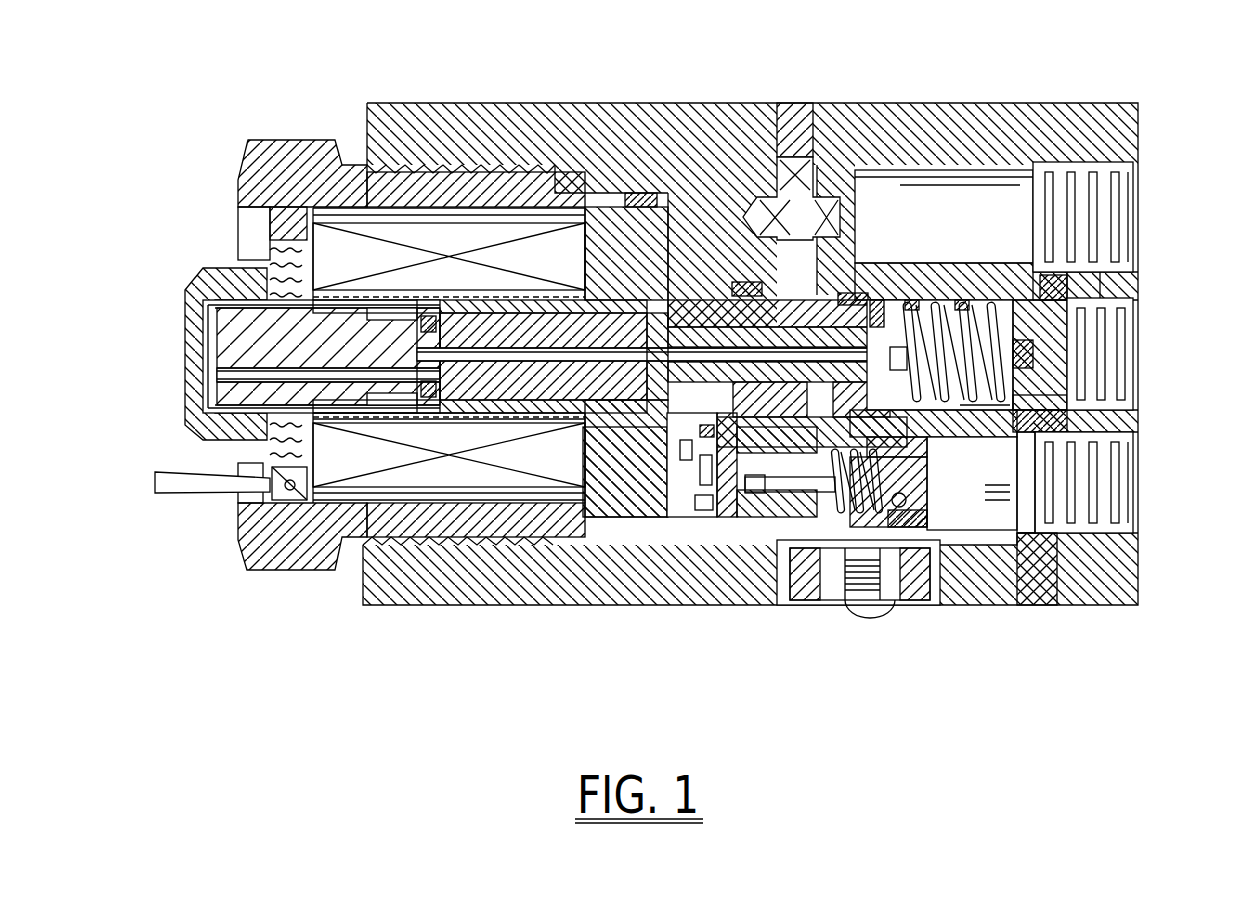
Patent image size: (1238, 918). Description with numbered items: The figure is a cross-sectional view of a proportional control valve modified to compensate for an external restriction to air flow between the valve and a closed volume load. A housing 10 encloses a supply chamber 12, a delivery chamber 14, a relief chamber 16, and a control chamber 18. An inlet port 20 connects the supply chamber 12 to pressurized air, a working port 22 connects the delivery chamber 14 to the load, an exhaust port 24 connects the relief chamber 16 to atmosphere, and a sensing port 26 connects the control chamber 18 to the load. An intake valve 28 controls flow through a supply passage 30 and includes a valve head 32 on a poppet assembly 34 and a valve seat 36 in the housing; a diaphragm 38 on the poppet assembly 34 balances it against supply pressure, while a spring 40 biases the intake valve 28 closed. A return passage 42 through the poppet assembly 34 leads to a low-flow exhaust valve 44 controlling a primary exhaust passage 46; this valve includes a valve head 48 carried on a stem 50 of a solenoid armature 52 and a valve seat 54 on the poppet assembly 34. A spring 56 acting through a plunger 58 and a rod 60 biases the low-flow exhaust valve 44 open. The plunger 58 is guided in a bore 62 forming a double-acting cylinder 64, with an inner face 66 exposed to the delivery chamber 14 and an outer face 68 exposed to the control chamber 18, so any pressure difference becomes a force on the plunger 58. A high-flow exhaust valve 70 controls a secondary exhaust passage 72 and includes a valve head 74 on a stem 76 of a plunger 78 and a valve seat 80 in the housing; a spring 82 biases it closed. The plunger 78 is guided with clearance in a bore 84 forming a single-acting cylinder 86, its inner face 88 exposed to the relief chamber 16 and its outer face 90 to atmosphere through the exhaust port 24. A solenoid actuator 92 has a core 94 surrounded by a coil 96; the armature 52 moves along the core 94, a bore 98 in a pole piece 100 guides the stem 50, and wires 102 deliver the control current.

The housing 10 is at (1098, 590).
The supply chamber 12 is at (855, 210).
The delivery chamber 14 is at (1005, 300).
The relief chamber 16 is at (630, 300).
The control chamber 18 is at (1105, 322).
The inlet port 20 is at (1130, 175).
The working port 22 is at (1130, 528).
The exhaust port 24 is at (935, 465).
The sensing port 26 is at (1090, 405).
The intake valve 28 is at (922, 295).
The supply passage 30 is at (778, 258).
The valve head 32 is at (915, 300).
The poppet assembly 34 is at (827, 315).
The valve seat 36 is at (876, 300).
The diaphragm 38 is at (745, 330).
The spring 40 is at (963, 300).
The return passage 42 is at (690, 447).
The low-flow exhaust valve 44 is at (625, 420).
The primary exhaust passage 46 is at (660, 440).
The valve head 48 is at (677, 312).
The stem 50 is at (460, 477).
The solenoid armature 52 is at (220, 335).
The valve seat 54 is at (710, 325).
The spring 56 is at (1120, 292).
The plunger 58 is at (1047, 443).
The rod 60 is at (962, 305).
The bore 62 is at (1085, 375).
The double-acting cylinder 64 is at (1067, 300).
The inner face 66 is at (962, 410).
The outer face 68 is at (1090, 350).
The high-flow exhaust valve 70 is at (1030, 545).
The secondary exhaust passage 72 is at (895, 505).
The valve head 74 is at (922, 480).
The stem 76 is at (850, 520).
The plunger 78 is at (760, 470).
The valve seat 80 is at (913, 500).
The spring 82 is at (865, 500).
The bore 84 is at (735, 540).
The single-acting cylinder 86 is at (763, 470).
The inner face 88 is at (720, 500).
The outer face 90 is at (785, 492).
The solenoid actuator 92 is at (238, 288).
The core 94 is at (283, 315).
The coil 96 is at (365, 487).
The bore 98 is at (467, 345).
The pole piece 100 is at (507, 320).
The wires 102 is at (212, 492).